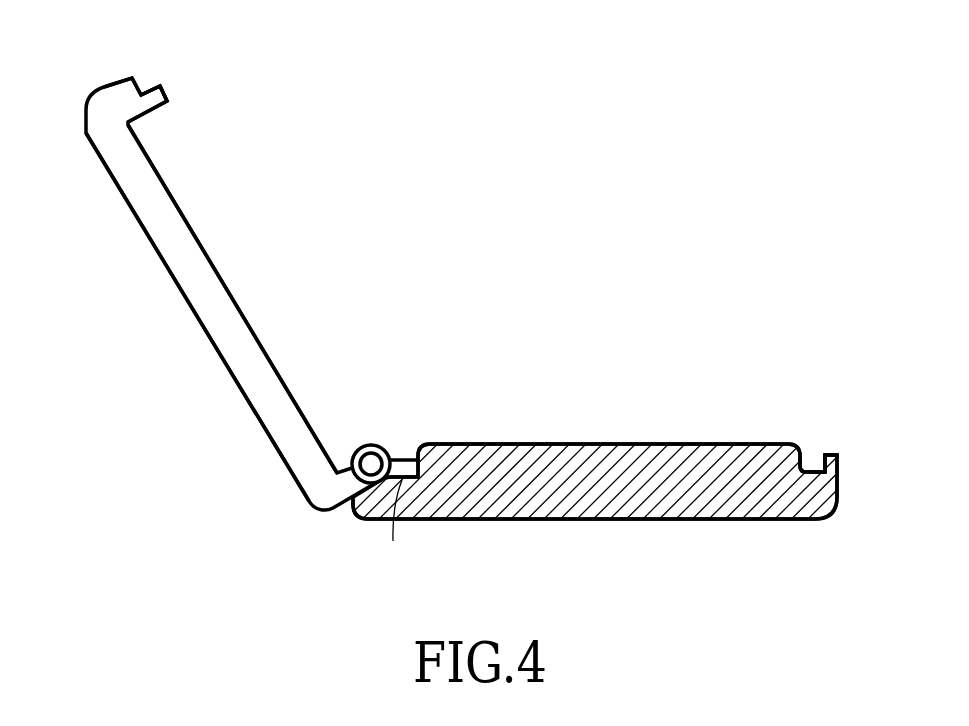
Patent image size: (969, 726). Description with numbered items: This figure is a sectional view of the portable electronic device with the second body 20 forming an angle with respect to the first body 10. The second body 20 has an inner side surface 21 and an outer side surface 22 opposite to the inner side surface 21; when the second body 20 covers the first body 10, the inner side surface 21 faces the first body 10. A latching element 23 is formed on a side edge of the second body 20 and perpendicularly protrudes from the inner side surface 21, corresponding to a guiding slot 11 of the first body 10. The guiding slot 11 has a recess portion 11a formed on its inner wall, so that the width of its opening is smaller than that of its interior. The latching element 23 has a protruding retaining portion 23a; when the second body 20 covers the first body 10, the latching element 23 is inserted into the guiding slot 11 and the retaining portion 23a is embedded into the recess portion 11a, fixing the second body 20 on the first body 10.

The first body 10 is at (692, 531).
The guiding slot 11 is at (838, 468).
The recess portion 11a is at (805, 461).
The second body 20 is at (211, 257).
The inner side surface 21 is at (169, 192).
The outer side surface 22 is at (146, 233).
The latching element 23 is at (153, 83).
The retaining portion 23a is at (165, 106).